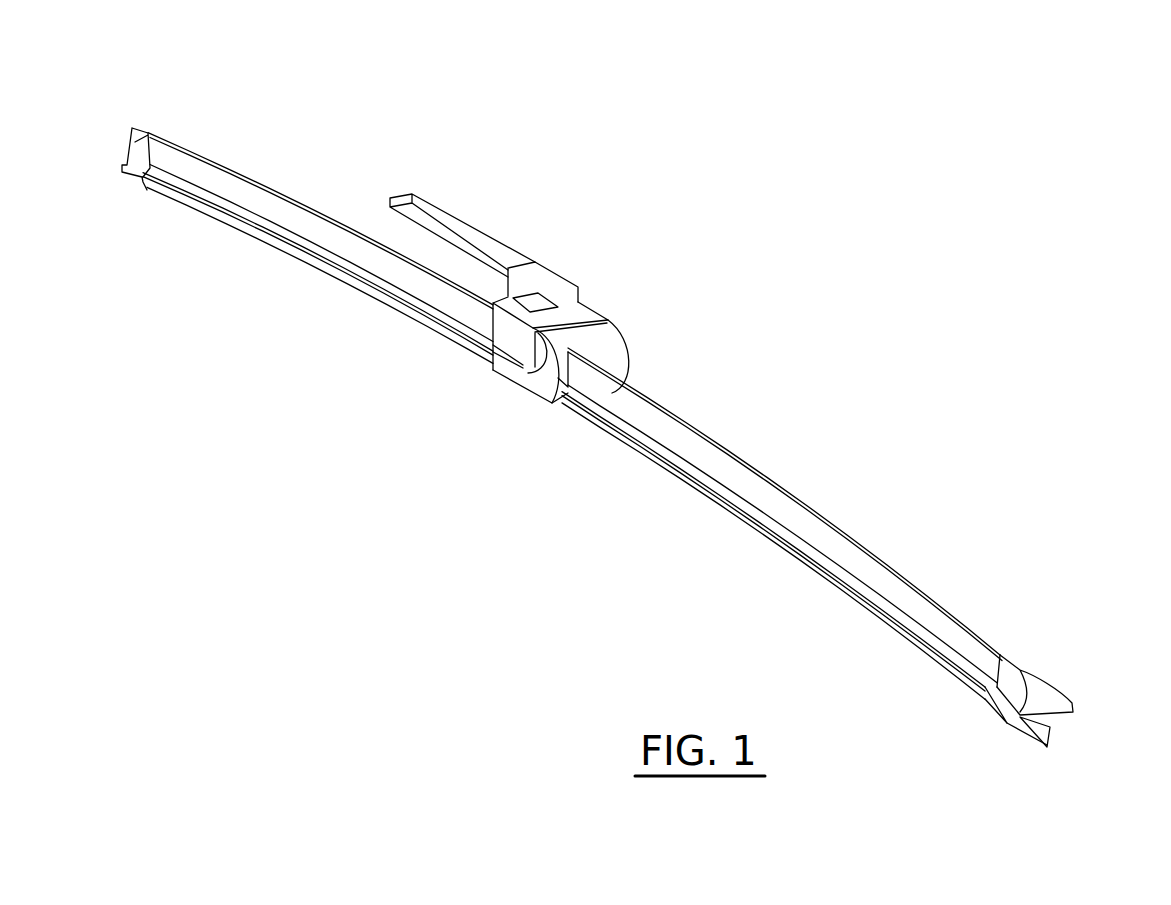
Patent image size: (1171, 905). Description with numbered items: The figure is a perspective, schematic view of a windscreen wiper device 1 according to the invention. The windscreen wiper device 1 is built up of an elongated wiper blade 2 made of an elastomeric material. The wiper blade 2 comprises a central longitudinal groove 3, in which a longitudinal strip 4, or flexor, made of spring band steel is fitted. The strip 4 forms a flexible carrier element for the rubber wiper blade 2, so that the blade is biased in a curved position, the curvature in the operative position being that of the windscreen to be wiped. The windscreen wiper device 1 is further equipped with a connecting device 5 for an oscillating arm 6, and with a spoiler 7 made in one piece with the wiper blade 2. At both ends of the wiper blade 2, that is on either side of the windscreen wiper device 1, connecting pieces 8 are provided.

The windscreen wiper device 1 is at (800, 329).
The wiper blade 2 is at (272, 243).
The central longitudinal groove 3 is at (1063, 722).
The longitudinal strip 4 is at (1047, 727).
The connecting device 5 is at (603, 348).
The oscillating arm 6 is at (450, 222).
The spoiler 7 is at (200, 170).
The connecting pieces 8 is at (135, 145).